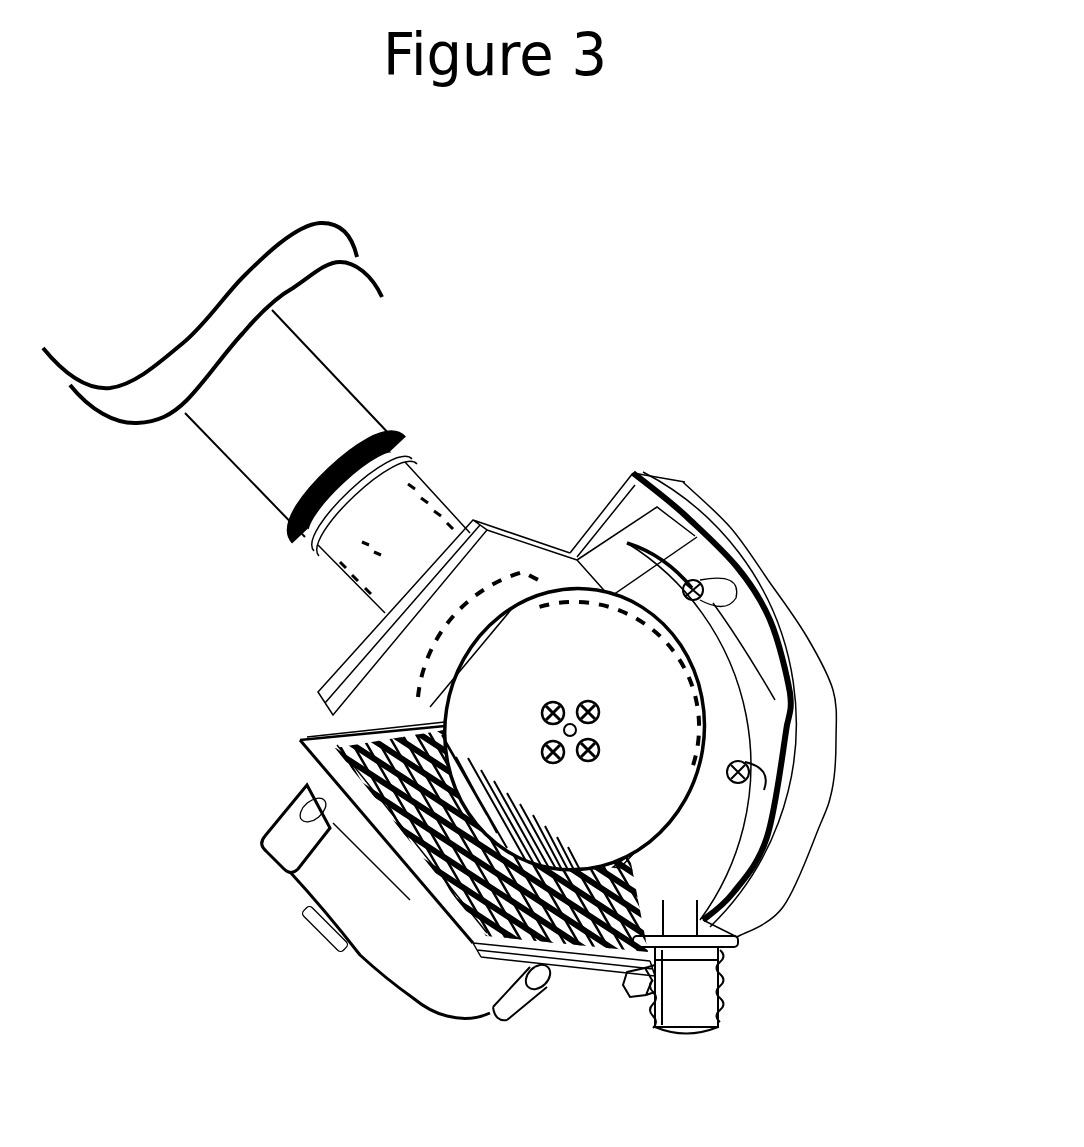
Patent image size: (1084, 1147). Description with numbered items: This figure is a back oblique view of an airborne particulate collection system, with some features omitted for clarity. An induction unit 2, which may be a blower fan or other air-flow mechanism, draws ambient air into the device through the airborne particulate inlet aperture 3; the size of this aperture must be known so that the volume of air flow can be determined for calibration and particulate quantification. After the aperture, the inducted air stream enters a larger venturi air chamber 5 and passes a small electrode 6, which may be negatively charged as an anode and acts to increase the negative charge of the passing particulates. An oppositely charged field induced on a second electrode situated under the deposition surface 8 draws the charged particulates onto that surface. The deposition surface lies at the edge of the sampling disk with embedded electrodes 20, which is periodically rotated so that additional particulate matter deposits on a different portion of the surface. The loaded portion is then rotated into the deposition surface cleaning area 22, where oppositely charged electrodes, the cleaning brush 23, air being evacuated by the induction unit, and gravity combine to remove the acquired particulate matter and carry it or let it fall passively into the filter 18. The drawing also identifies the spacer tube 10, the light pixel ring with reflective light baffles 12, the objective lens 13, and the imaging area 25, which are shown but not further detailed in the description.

The induction unit 2 is at (387, 947).
The airborne particulate inlet aperture 3 is at (690, 1007).
The air chamber 5 is at (728, 863).
The electrode 6 is at (732, 820).
The deposition surface 8 is at (707, 735).
The spacer tube 10 is at (307, 413).
The light pixel ring with reflective light baffles 12 is at (533, 563).
The objective lens 13 is at (422, 545).
The filter 18 is at (573, 960).
The sampling disk with embedded electrodes 20 is at (673, 653).
The deposition surface cleaning area 22 is at (478, 795).
The cleaning brush 23 is at (437, 837).
The imaging area 25 is at (477, 632).